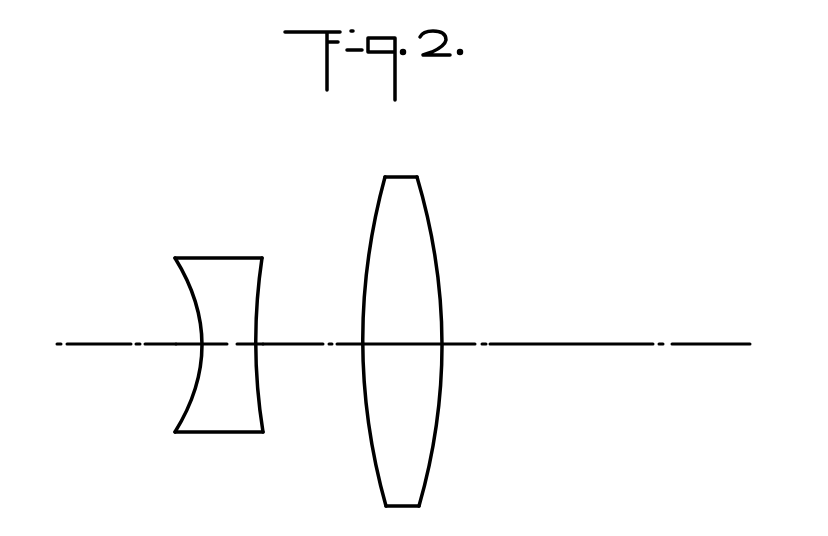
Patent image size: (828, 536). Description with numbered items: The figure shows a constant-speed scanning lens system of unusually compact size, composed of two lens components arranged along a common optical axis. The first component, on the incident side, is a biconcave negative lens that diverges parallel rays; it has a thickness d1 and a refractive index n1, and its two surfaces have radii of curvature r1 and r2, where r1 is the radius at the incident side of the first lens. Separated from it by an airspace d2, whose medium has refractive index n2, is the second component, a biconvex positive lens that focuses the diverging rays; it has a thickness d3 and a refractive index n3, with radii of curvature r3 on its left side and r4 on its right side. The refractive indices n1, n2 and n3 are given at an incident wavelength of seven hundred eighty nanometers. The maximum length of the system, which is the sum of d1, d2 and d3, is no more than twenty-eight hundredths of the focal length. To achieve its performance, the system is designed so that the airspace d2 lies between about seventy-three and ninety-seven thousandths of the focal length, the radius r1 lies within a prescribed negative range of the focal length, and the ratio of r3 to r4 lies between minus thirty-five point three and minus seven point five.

The radius of curvature of the first surface r1 is at (182, 285).
The radius of curvature of the second surface r2 is at (262, 277).
The radius of curvature of the third surface r3 is at (380, 190).
The radius of curvature of the fourth surface r4 is at (443, 313).
The refractive index of the first lens n1 is at (208, 315).
The refractive index of the air space n2 is at (313, 352).
The refractive index of the second lens n3 is at (414, 313).
The thickness of the first lens d1 is at (235, 349).
The airspace between the lenses d2 is at (315, 346).
The thickness of the second lens d3 is at (395, 346).